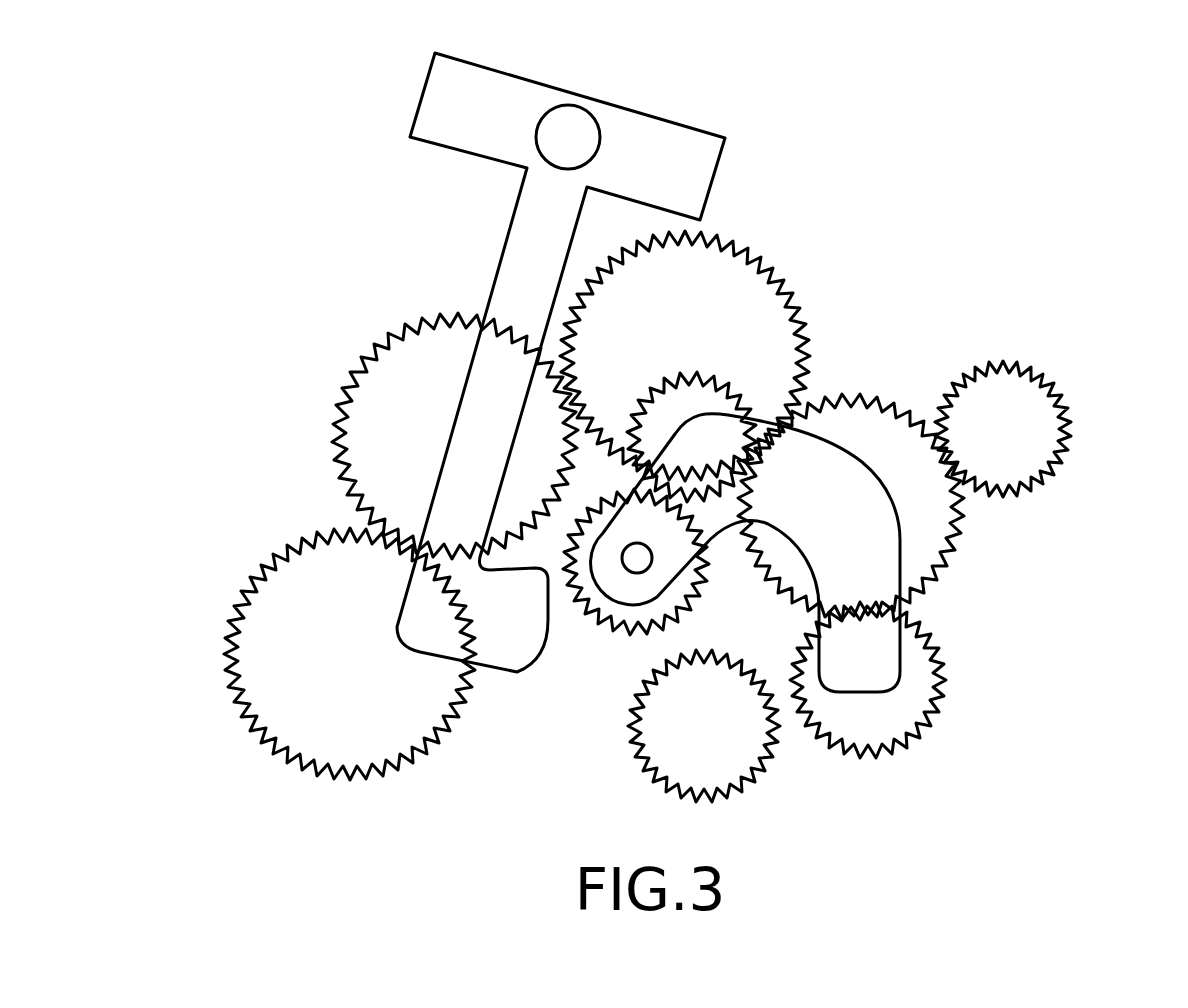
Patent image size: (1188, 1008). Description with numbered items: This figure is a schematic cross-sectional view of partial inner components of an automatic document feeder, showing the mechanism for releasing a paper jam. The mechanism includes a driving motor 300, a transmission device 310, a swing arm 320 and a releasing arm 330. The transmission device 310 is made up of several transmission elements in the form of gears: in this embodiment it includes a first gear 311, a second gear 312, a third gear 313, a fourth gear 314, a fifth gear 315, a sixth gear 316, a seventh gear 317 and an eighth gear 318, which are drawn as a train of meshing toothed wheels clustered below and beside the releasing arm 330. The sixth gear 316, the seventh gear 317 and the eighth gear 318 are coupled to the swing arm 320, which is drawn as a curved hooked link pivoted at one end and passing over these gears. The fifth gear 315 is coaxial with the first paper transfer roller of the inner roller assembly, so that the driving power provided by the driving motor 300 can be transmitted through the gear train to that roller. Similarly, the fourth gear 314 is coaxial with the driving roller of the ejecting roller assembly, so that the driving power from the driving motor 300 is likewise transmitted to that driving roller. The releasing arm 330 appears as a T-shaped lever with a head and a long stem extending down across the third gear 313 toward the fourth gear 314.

The driving motor 300 is at (1050, 390).
The transmission device 310 is at (933, 244).
The first gear 311 is at (967, 510).
The second gear 312 is at (752, 262).
The third gear 313 is at (353, 367).
The fourth gear 314 is at (240, 600).
The fifth gear 315 is at (767, 753).
The sixth gear 316 is at (723, 377).
The seventh gear 317 is at (610, 630).
The eighth gear 318 is at (907, 743).
The swing arm 320 is at (903, 547).
The releasing arm 330 is at (680, 118).